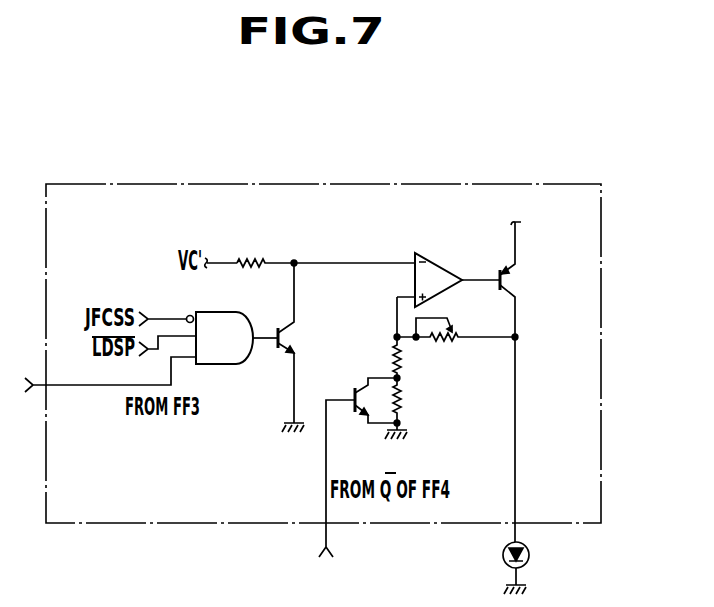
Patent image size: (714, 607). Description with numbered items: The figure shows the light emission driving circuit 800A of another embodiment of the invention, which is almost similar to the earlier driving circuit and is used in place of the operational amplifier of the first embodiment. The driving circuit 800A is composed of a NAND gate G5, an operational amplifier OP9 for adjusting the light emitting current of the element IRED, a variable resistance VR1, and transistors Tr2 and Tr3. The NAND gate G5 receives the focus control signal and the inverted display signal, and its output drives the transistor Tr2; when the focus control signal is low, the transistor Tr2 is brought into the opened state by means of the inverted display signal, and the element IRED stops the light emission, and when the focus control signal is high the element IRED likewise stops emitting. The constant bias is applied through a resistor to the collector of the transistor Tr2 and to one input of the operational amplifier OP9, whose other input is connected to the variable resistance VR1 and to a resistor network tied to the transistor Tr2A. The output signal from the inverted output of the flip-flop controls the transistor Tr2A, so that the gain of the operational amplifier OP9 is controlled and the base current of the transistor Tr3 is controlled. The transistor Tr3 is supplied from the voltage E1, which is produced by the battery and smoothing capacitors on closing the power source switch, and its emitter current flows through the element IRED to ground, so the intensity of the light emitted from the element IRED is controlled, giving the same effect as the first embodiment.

The driving circuit 800A is at (393, 184).
The NAND gate G5 is at (220, 338).
The transistor Tr2 is at (301, 347).
The transistor Tr2A is at (358, 467).
The transistor Tr3 is at (523, 281).
The operational amplifier OP9 is at (438, 280).
The variable resistance VR1 is at (456, 320).
The voltage E1 is at (528, 228).
The light emitting element IRED is at (537, 465).